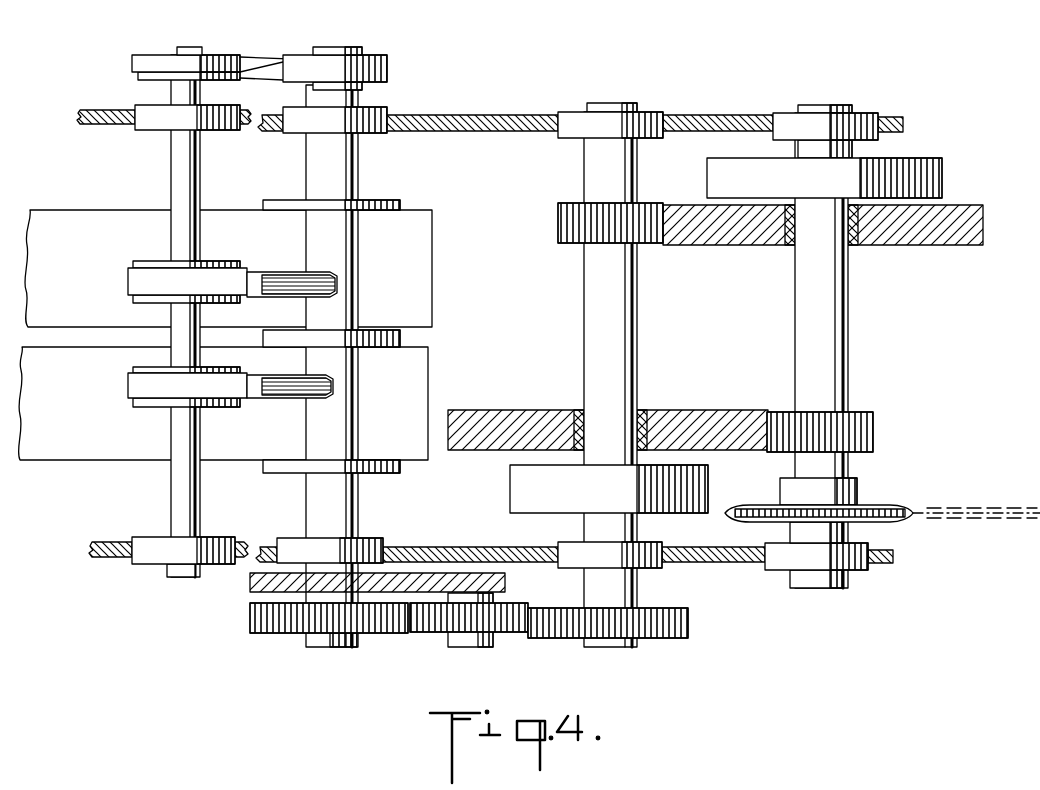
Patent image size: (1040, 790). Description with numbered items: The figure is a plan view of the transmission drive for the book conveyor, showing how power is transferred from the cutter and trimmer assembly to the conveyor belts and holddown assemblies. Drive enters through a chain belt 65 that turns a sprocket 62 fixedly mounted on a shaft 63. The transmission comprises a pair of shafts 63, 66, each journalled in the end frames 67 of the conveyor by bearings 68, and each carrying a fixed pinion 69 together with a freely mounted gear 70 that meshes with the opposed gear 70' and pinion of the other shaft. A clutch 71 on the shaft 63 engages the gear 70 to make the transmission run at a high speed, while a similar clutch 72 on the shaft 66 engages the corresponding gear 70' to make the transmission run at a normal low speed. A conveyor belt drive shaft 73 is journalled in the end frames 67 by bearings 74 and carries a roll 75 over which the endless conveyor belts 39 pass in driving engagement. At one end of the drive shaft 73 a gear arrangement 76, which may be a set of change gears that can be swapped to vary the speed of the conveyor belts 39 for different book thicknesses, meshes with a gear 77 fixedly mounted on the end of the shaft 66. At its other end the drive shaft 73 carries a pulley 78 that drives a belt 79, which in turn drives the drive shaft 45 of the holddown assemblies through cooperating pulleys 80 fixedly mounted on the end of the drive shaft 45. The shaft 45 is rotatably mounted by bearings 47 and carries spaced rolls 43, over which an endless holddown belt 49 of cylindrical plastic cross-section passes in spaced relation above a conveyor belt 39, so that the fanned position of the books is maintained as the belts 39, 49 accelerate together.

The endless conveyor belts 39 is at (425, 212).
The spaced rolls 43 is at (140, 262).
The drive shaft of the holddown assemblies 45 is at (173, 190).
The bearings 47 is at (155, 122).
The endless holddown belt 49 is at (305, 278).
The sprocket 62 is at (897, 505).
The shaft 63 is at (848, 337).
The chain belt 65 is at (978, 505).
The shaft 66 is at (585, 342).
The end frames 67 is at (512, 125).
The bearings 68 is at (660, 115).
The fixed pinion 69 is at (560, 242).
The freely mounted gear 70 is at (833, 245).
The opposed gear 70' is at (608, 410).
The clutch 71 is at (945, 178).
The clutch 72 is at (525, 497).
The conveyor belt drive shaft 73 is at (352, 489).
The bearings 74 is at (385, 135).
The roll 75 is at (280, 475).
The gear arrangement 76 is at (424, 655).
The gear 77 is at (668, 634).
The pulley 78 is at (387, 57).
The belt 79 is at (262, 55).
The pulleys 80 is at (140, 55).